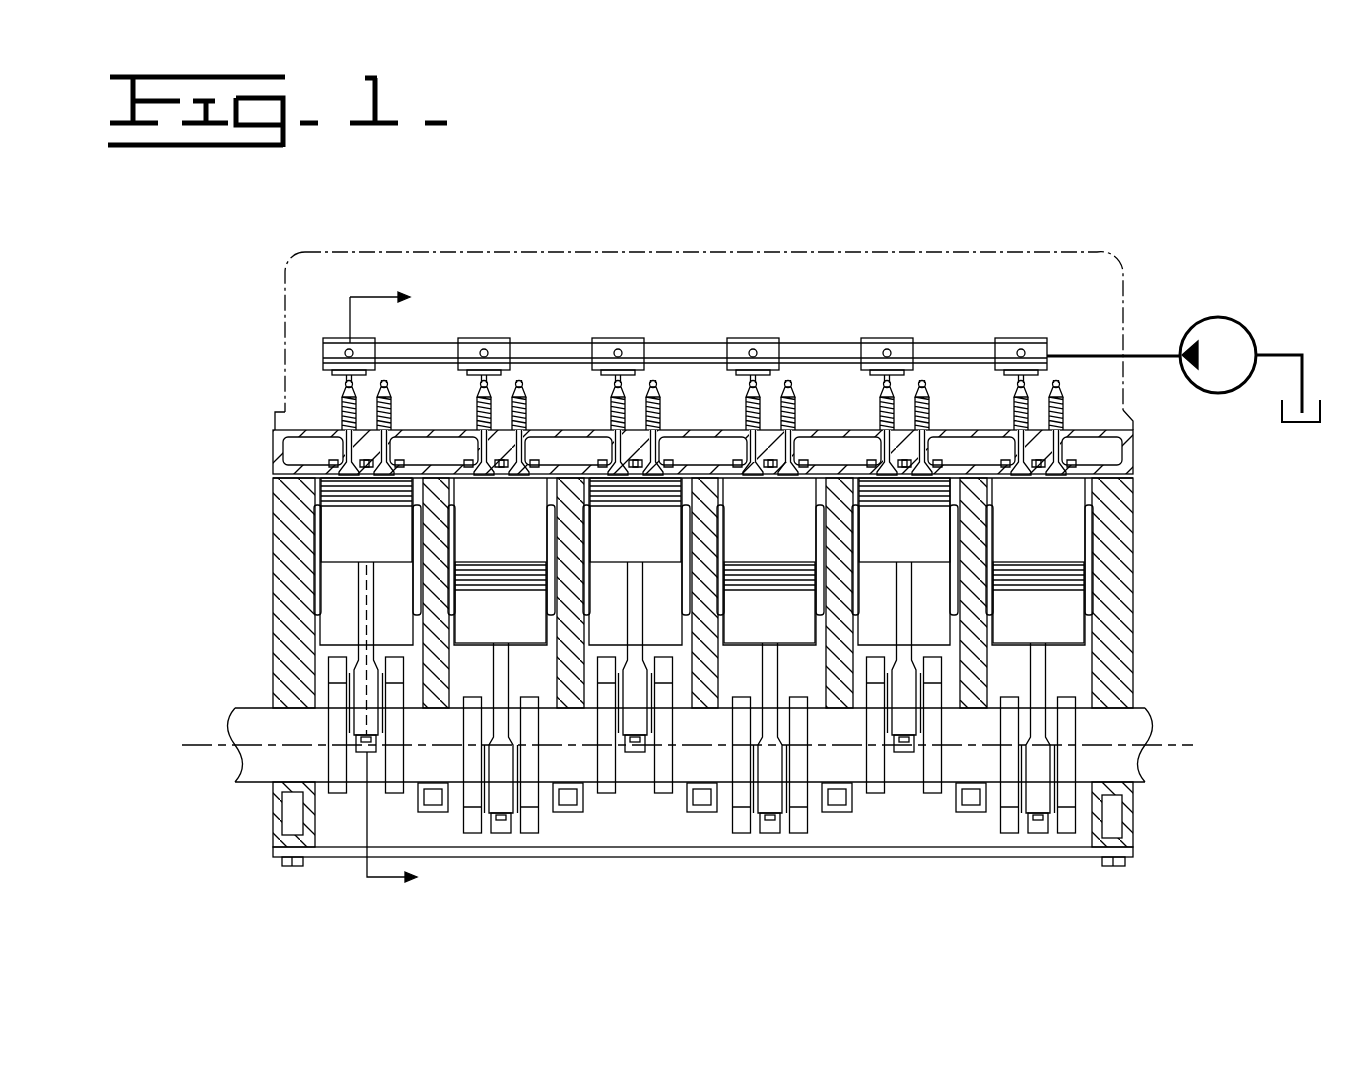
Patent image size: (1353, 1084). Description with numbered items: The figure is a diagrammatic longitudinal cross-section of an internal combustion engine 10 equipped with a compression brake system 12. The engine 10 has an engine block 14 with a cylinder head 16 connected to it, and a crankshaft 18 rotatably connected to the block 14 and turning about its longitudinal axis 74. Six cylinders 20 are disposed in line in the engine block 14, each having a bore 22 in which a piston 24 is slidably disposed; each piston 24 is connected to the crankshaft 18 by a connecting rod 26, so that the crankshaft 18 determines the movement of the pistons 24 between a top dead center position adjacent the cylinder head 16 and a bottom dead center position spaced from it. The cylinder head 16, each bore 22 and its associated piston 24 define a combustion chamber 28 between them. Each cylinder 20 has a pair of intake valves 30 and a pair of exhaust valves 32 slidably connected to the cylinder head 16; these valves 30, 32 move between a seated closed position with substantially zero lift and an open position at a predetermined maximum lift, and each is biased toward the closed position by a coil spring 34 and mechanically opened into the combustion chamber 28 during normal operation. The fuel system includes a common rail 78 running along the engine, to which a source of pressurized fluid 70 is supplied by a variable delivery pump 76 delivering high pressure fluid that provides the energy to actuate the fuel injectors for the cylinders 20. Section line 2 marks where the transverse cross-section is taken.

The section line 2 is at (374, 590).
The internal combustion engine 10 is at (1088, 158).
The compression brake system 12 is at (1103, 269).
The engine block 14 is at (1133, 635).
The cylinder head 16 is at (273, 452).
The crankshaft 18 is at (250, 708).
The cylinder 20 is at (322, 513).
The bore 22 is at (322, 565).
The piston 24 is at (375, 546).
The connecting rod 26 is at (362, 618).
The combustion chamber 28 is at (337, 476).
The intake valve 30 is at (392, 468).
The exhaust valve 32 is at (349, 463).
The coil spring 34 is at (357, 400).
The source of pressurized fluid 70 is at (1183, 336).
The longitudinal axis 74 is at (193, 748).
The variable delivery pump 76 is at (1214, 366).
The common rail 78 is at (1030, 350).